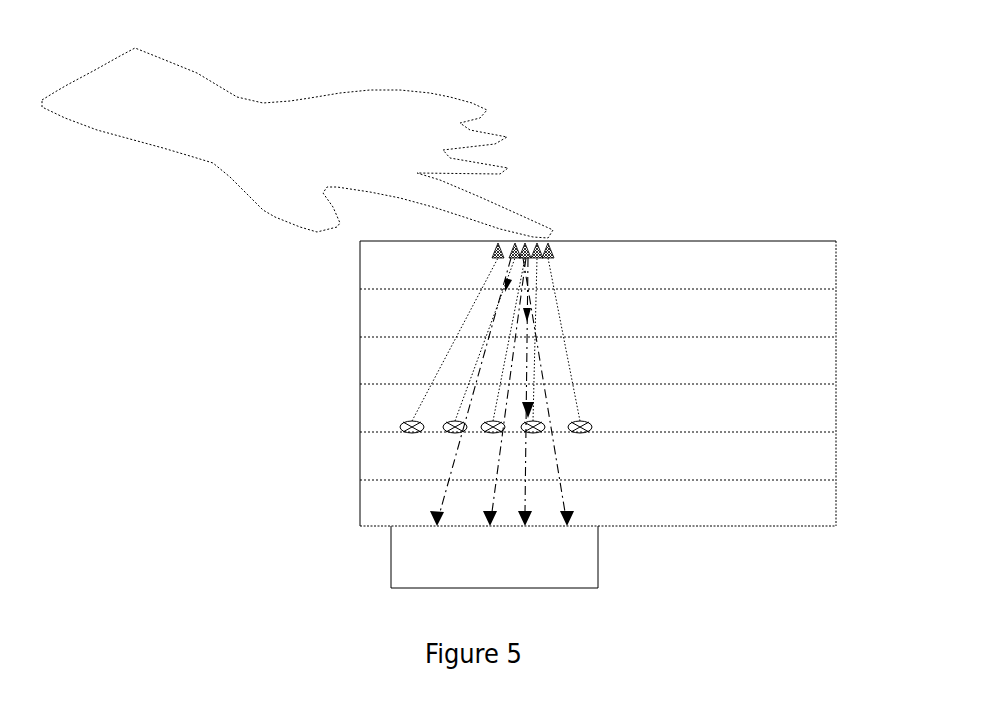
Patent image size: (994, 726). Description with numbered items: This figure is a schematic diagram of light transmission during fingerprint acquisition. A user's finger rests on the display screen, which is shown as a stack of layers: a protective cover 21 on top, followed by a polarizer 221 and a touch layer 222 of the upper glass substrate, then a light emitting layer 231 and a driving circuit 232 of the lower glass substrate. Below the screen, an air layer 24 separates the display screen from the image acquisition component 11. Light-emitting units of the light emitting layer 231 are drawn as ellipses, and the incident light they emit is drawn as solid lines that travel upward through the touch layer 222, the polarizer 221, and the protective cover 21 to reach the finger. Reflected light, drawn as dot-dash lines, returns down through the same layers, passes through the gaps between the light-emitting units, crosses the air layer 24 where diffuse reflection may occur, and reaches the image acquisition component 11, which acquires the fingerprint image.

The image acquisition component 11 is at (598, 558).
The protective cover 21 is at (836, 268).
The polarizer 221 is at (360, 312).
The touch layer 222 is at (360, 358).
The light emitting layer 231 is at (360, 405).
The driving circuit 232 is at (360, 470).
The air layer 24 is at (836, 513).